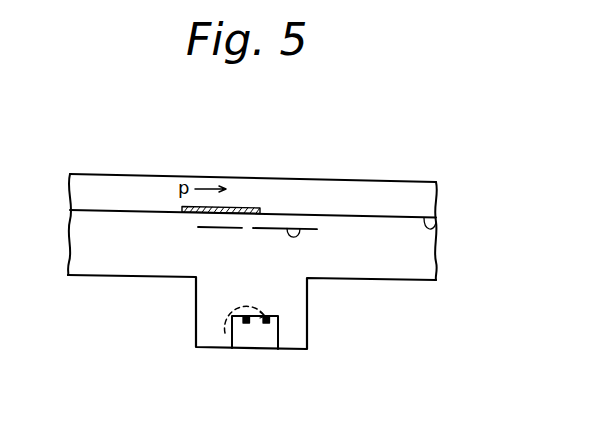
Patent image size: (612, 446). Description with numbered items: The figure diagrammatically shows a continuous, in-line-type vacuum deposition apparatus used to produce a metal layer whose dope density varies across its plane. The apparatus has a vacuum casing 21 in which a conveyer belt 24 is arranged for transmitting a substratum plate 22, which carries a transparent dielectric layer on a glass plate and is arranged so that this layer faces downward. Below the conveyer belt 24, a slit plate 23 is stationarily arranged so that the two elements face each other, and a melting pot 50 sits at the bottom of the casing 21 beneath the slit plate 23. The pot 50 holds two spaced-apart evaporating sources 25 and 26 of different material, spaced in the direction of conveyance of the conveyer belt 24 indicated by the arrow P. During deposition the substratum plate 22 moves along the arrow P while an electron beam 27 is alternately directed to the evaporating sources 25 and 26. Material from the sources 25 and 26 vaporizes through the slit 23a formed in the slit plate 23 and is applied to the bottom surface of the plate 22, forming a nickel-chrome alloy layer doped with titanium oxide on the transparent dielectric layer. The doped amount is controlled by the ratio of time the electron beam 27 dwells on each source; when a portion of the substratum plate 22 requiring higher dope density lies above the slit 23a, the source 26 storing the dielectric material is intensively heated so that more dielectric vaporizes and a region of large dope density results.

The vacuum casing 21 is at (370, 181).
The substratum plate 22 is at (259, 208).
The slit plate 23 is at (299, 230).
The slit 23a is at (250, 231).
The conveyer belt 24 is at (437, 230).
The evaporating source 25 is at (268, 317).
The evaporating source 26 is at (245, 319).
The electron beam 27 is at (226, 313).
The melting pot 50 is at (278, 336).